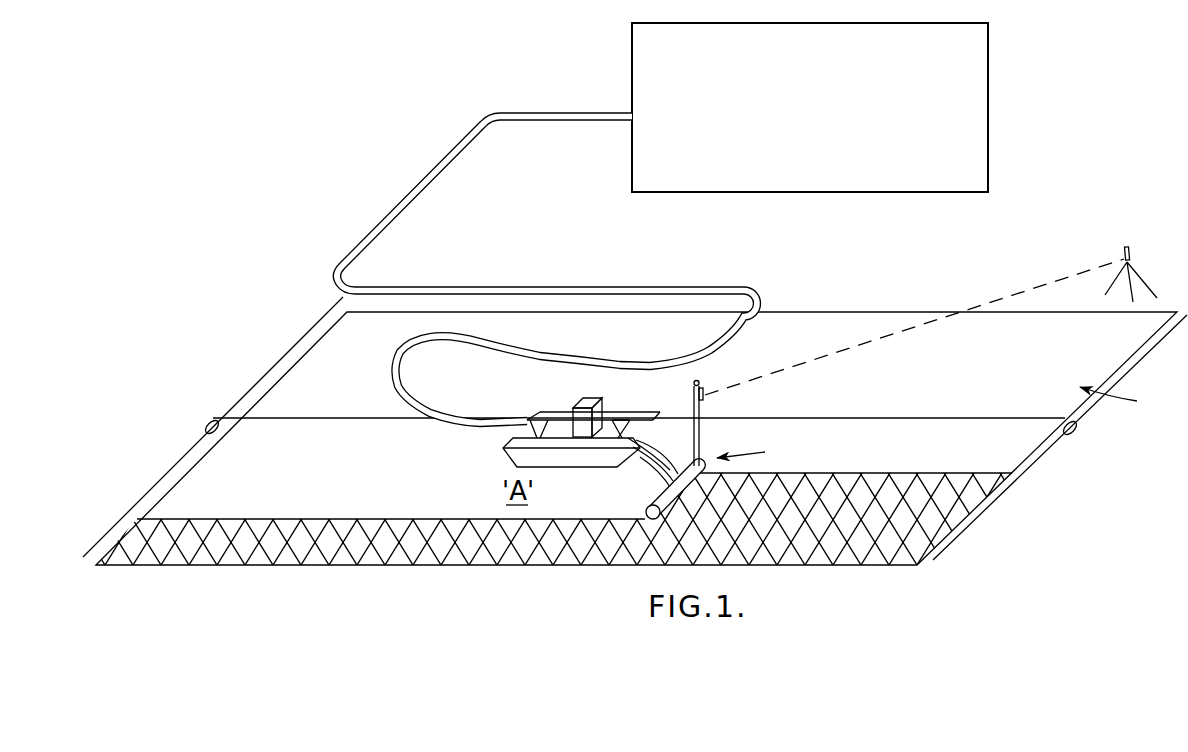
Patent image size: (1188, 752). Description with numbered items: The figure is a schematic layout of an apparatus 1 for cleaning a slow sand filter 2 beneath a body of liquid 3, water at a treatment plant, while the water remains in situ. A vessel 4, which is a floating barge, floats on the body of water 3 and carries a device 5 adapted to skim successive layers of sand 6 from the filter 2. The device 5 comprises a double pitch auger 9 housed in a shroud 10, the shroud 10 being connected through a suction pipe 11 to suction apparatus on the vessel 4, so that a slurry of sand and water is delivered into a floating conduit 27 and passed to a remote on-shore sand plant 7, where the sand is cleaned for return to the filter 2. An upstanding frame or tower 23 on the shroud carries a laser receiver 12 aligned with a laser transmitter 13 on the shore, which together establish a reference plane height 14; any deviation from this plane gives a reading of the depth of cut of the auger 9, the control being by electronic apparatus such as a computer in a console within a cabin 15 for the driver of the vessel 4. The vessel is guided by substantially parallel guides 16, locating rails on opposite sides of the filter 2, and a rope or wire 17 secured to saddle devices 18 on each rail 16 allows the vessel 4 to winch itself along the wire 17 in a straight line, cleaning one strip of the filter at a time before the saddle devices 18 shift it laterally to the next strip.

The apparatus 1 is at (397, 192).
The slow sand filter 2 is at (1119, 403).
The body of liquid 3 is at (1122, 346).
The vessel 4 is at (520, 458).
The device 5 is at (750, 448).
The sand 6 is at (953, 462).
The sand plant 7 is at (815, 132).
The double pitch auger 9 is at (647, 511).
The shroud 10 is at (708, 484).
The suction pipe 11 is at (662, 450).
The laser receiver 12 is at (704, 393).
The laser transmitter 13 is at (1130, 252).
The reference plane height 14 is at (1000, 295).
The cabin 15 is at (583, 402).
The guides 16 is at (186, 452).
The rope or wire 17 is at (318, 418).
The saddle devices 18 is at (211, 418).
The frame or tower 23 is at (706, 432).
The floating conduit 27 is at (741, 286).